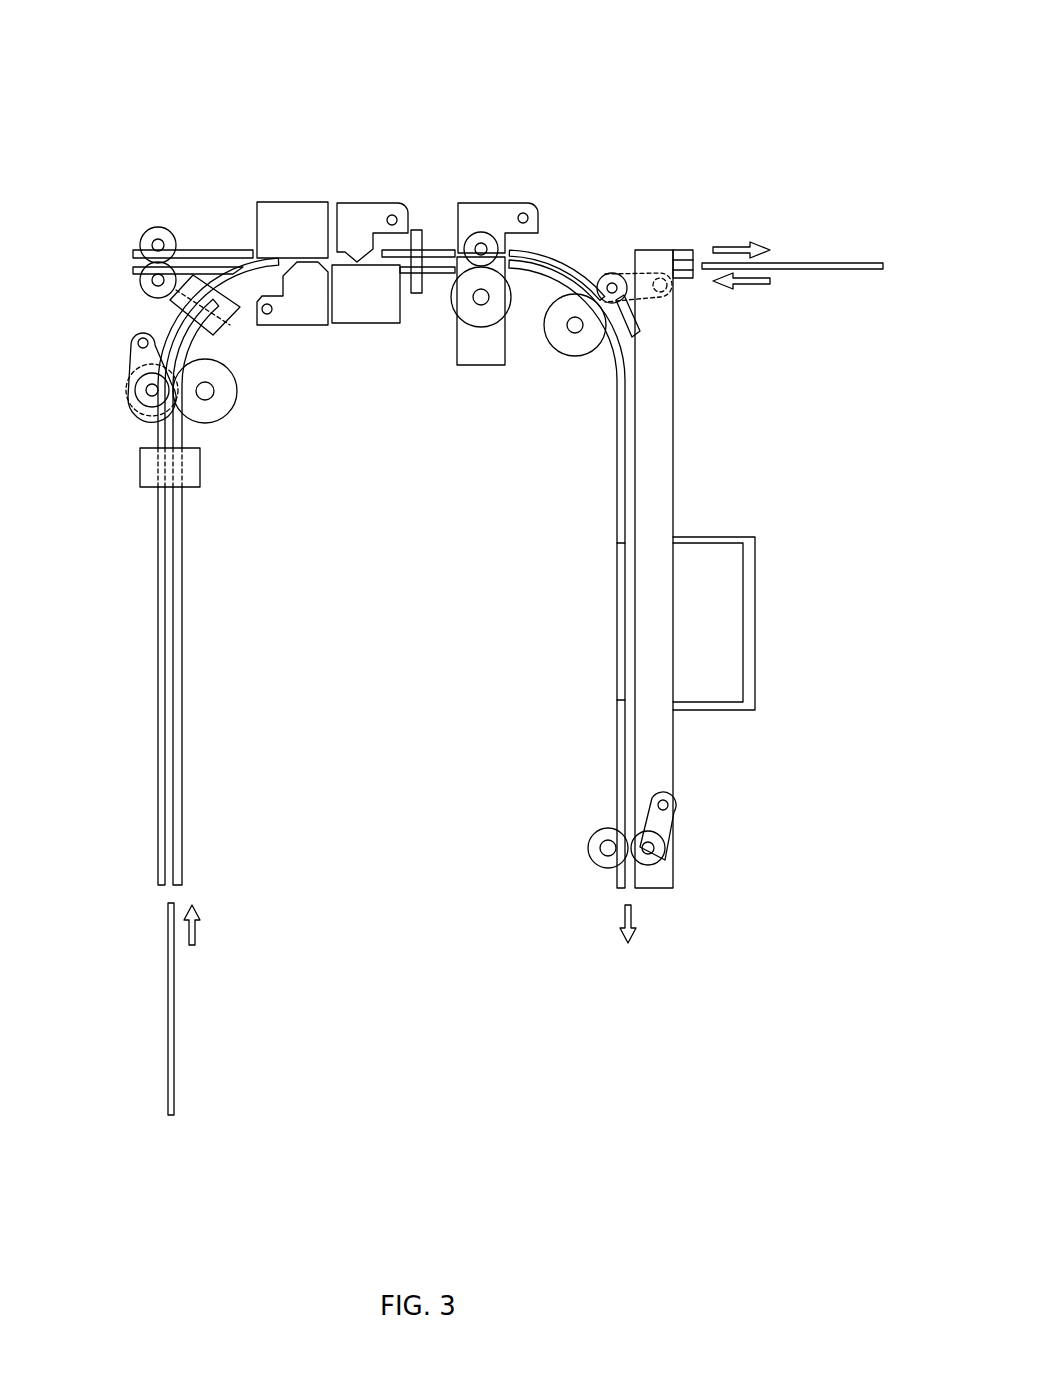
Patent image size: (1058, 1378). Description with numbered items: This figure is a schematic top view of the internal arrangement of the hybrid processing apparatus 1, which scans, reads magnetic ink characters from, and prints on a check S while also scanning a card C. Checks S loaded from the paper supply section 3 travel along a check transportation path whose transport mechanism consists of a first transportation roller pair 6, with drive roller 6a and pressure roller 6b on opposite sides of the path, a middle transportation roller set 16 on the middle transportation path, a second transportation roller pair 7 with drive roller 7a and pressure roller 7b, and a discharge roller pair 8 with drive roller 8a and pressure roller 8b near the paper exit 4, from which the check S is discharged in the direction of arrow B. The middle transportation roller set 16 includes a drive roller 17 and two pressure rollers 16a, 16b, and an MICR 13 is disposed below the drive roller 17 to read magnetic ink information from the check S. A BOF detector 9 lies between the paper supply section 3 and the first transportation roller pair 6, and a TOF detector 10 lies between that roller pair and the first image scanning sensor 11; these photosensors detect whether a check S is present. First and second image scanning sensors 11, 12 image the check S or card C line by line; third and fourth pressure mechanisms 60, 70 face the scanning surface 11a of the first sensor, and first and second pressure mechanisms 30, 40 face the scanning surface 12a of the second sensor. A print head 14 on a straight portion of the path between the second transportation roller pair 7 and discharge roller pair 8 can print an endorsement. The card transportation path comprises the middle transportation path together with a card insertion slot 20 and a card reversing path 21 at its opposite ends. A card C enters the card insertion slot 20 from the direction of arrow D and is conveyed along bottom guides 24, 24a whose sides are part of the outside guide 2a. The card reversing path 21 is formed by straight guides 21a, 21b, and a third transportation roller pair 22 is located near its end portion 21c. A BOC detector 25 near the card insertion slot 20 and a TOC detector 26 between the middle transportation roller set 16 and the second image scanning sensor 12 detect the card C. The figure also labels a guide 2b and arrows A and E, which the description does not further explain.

The hybrid processing apparatus 1 is at (553, 82).
The outside guide 2a is at (660, 405).
The guide plate 2b is at (632, 362).
The paper supply section 3 is at (188, 650).
The paper exit 4 is at (642, 905).
The first transportation roller pair 6 is at (243, 423).
The drive roller 6a is at (237, 393).
The pressure roller 6b is at (172, 428).
The second transportation roller pair 7 is at (568, 381).
The drive roller 7a is at (565, 345).
The pressure roller 7b is at (600, 340).
The discharge roller pair 8 is at (663, 861).
The drive roller 8a is at (632, 882).
The pressure roller 8b is at (676, 839).
The BOF detector 9 is at (200, 477).
The TOF detector 10 is at (228, 326).
The first image scanning sensor 11 is at (291, 202).
The scanning surface 11a is at (294, 282).
The second image scanning sensor 12 is at (392, 325).
The scanning surface 12a is at (378, 268).
The MICR 13 is at (478, 366).
The print head 14 is at (722, 552).
The middle transportation roller set 16 is at (474, 197).
The pressure roller 16a is at (466, 190).
The pressure roller 16b is at (462, 203).
The drive roller 17 is at (502, 221).
The card insertion slot 20 is at (612, 262).
The card reversing path 21 is at (170, 212).
The straight guide 21a is at (238, 250).
The straight guide 21b is at (160, 227).
The end portion 21c is at (140, 266).
The third transportation roller pair 22 is at (135, 290).
The bottom guide 24 is at (645, 250).
The bottom guide 24a is at (550, 256).
The BOC detector 25 is at (684, 250).
The TOC detector 26 is at (416, 228).
The first pressure mechanism 30 is at (364, 176).
The second pressure mechanism 40 is at (372, 204).
The third pressure mechanism 60 is at (303, 335).
The fourth pressure mechanism 70 is at (300, 326).
The sheet feed direction A is at (203, 928).
The arrow B is at (617, 925).
The card C is at (815, 262).
The arrow D is at (741, 295).
The tray insertion direction E is at (741, 237).
The check S is at (176, 1000).